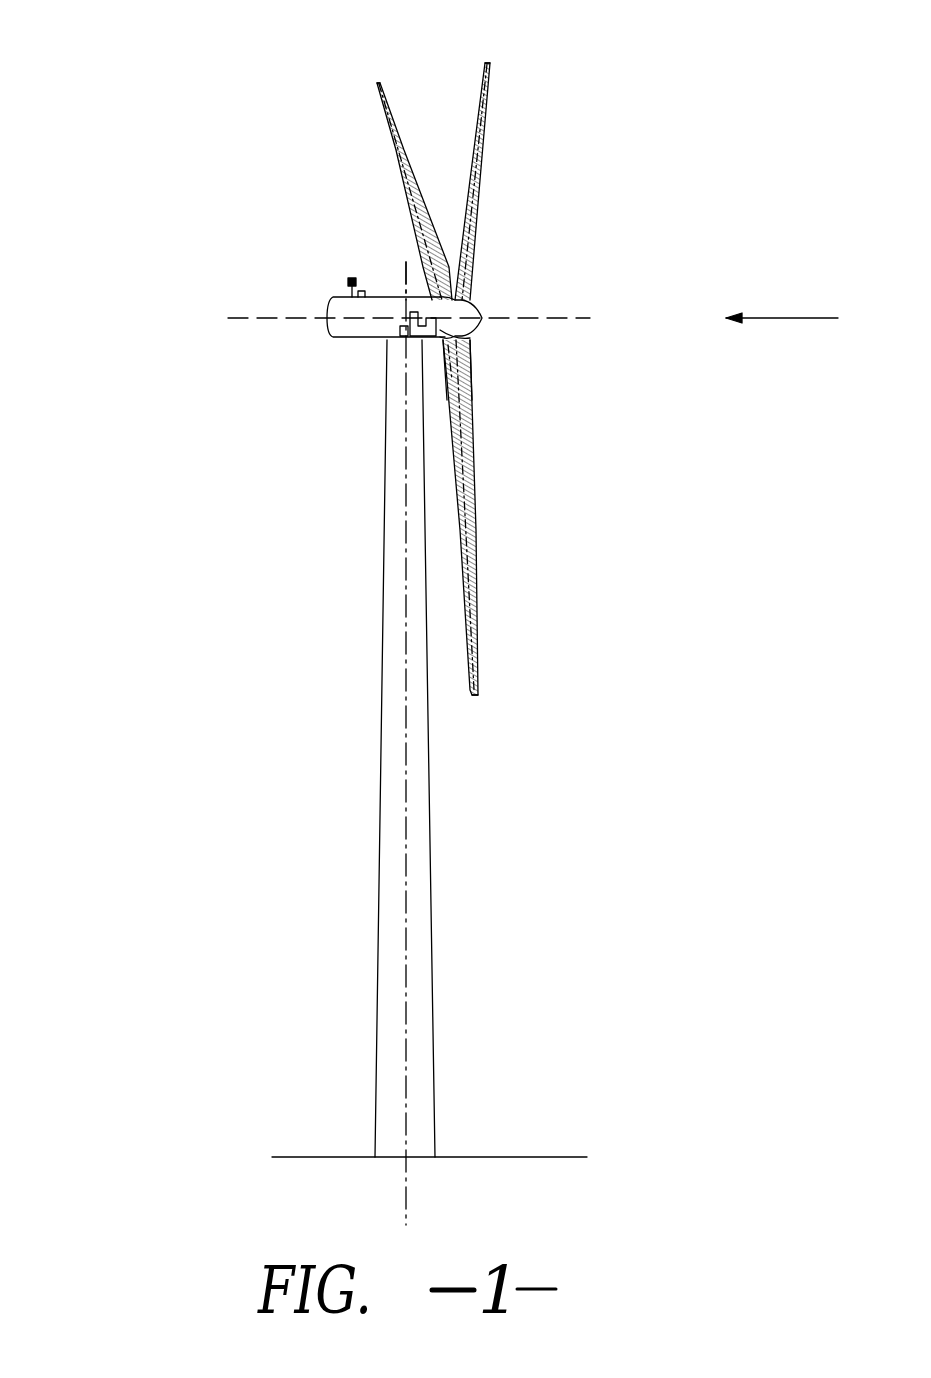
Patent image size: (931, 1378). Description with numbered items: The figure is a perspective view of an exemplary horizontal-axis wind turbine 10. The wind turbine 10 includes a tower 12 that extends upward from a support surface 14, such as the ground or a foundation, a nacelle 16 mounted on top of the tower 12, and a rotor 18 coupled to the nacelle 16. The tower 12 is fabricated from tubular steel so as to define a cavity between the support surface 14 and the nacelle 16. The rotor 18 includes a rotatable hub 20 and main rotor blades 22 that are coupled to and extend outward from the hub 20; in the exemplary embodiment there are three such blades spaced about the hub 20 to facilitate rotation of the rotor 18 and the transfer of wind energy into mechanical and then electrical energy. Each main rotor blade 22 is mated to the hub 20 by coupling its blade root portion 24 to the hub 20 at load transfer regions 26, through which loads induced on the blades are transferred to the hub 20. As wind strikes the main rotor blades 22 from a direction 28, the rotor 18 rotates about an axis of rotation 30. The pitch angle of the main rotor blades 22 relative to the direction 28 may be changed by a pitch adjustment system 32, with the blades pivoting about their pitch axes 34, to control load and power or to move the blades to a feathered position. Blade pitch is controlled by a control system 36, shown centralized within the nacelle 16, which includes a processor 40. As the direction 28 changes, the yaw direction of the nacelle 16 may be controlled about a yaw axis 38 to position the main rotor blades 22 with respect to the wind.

The wind turbine 10 is at (146, 90).
The tower 12 is at (380, 915).
The support surface 14 is at (330, 1157).
The nacelle 16 is at (355, 340).
The rotor 18 is at (490, 214).
The rotatable hub 20 is at (476, 312).
The main rotor blade 22 is at (431, 374).
The blade root portion 24 is at (468, 430).
The load transfer regions 26 is at (462, 340).
The direction 28 is at (800, 318).
The axis of rotation 30 is at (555, 318).
The pitch adjustment system 32 is at (457, 378).
The pitch axes 34 is at (376, 90).
The control system 36 is at (400, 365).
The yaw axis 38 is at (406, 797).
The processor 40 is at (406, 262).